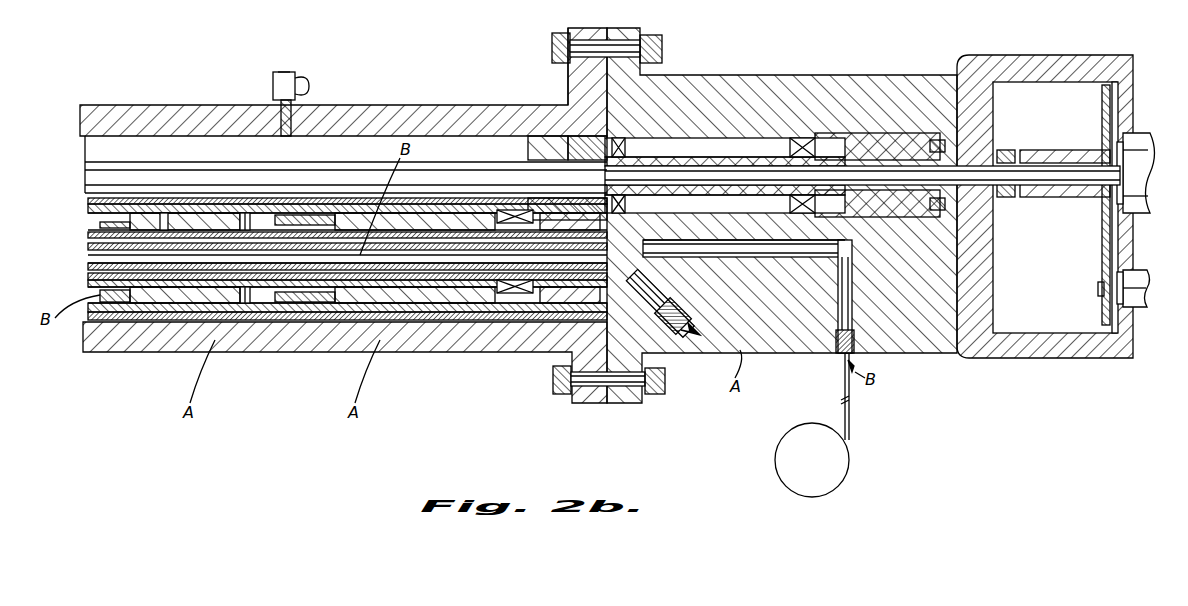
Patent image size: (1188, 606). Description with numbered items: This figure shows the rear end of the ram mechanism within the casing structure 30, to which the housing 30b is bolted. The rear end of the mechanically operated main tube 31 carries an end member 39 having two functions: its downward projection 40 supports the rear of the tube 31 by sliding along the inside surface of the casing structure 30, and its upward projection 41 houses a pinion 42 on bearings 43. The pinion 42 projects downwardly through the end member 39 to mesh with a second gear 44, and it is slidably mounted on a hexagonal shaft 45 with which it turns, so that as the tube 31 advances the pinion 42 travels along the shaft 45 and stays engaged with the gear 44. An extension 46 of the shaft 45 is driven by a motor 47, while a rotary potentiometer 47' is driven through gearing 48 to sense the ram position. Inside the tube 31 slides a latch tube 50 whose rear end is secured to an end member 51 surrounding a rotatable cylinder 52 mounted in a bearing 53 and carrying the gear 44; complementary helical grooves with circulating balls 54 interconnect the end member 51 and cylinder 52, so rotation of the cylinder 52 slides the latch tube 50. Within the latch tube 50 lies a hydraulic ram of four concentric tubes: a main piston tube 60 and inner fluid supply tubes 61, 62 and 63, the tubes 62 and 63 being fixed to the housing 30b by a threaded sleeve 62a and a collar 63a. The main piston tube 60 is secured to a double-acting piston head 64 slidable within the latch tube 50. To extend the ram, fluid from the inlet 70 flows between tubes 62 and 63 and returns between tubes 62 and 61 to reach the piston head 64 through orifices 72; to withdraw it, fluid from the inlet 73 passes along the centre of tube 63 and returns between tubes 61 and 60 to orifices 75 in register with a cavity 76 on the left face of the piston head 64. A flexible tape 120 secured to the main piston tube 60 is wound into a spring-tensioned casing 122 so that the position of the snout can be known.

The casing structure 30 is at (490, 343).
The housing 30b is at (760, 348).
The tube 31 is at (310, 315).
The end member 39 is at (420, 335).
The downward projection 40 is at (560, 352).
The upward projection 41 is at (575, 105).
The pinion 42 is at (600, 105).
The bearings 43 is at (528, 148).
The second gear 44 is at (655, 170).
The hexagonal shaft 45 is at (322, 175).
The extension of shaft 46 is at (785, 168).
The motor 47 is at (1144, 153).
The rotary potentiometer 47' is at (1145, 271).
The gearing 48 is at (1102, 236).
The latch tube 50 is at (175, 300).
The end member 51 is at (250, 305).
The rotatable cylinder 52 is at (350, 300).
The bearing 53 is at (470, 320).
The balls 54 is at (300, 305).
The main piston tube 60 is at (100, 200).
The inner fluid supply tube 61 is at (105, 208).
The inner fluid supply tube 62 is at (100, 232).
The threaded sleeve 62a is at (700, 160).
The inner fluid supply tube 63 is at (100, 245).
The collar 63a is at (652, 236).
The piston head 64 is at (160, 213).
The inlet 70 is at (668, 345).
The orifices 72 is at (243, 213).
The inlet 73 is at (858, 332).
The orifices 75 is at (140, 220).
The cavity 76 is at (140, 300).
The flexible tape 120 is at (95, 258).
The casing 122 is at (775, 455).